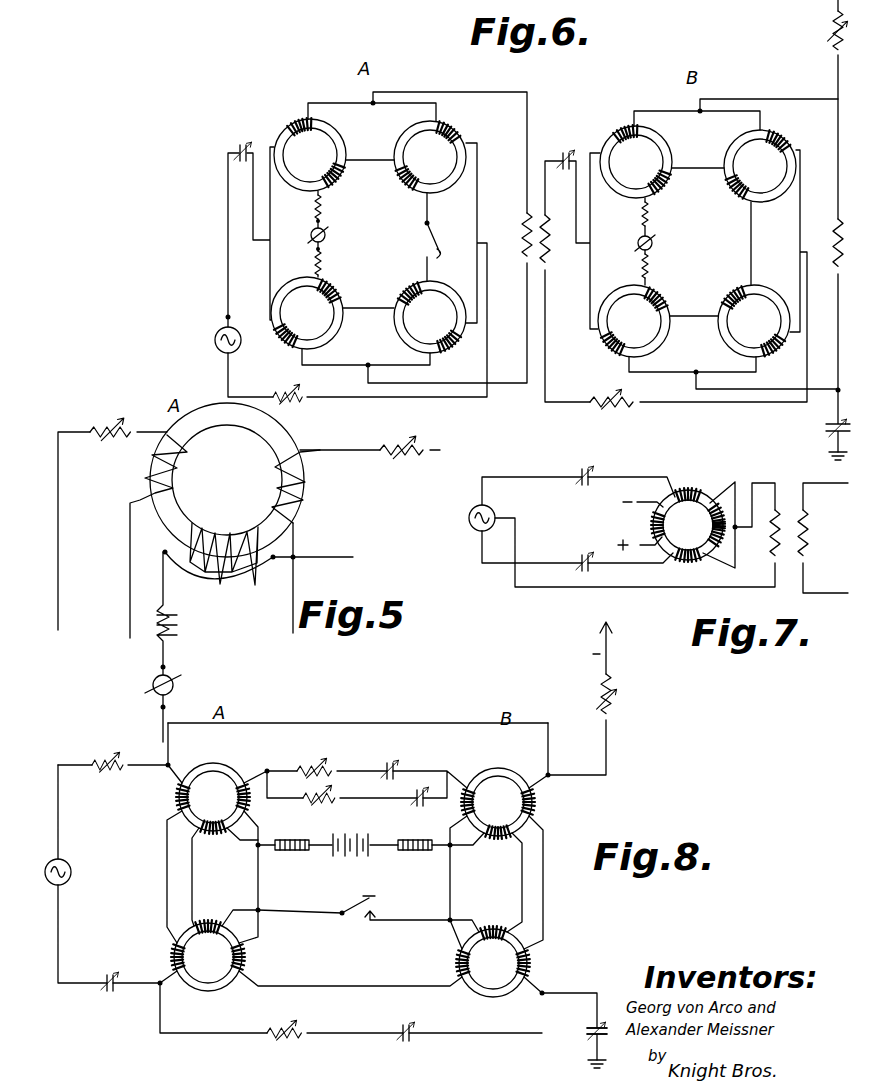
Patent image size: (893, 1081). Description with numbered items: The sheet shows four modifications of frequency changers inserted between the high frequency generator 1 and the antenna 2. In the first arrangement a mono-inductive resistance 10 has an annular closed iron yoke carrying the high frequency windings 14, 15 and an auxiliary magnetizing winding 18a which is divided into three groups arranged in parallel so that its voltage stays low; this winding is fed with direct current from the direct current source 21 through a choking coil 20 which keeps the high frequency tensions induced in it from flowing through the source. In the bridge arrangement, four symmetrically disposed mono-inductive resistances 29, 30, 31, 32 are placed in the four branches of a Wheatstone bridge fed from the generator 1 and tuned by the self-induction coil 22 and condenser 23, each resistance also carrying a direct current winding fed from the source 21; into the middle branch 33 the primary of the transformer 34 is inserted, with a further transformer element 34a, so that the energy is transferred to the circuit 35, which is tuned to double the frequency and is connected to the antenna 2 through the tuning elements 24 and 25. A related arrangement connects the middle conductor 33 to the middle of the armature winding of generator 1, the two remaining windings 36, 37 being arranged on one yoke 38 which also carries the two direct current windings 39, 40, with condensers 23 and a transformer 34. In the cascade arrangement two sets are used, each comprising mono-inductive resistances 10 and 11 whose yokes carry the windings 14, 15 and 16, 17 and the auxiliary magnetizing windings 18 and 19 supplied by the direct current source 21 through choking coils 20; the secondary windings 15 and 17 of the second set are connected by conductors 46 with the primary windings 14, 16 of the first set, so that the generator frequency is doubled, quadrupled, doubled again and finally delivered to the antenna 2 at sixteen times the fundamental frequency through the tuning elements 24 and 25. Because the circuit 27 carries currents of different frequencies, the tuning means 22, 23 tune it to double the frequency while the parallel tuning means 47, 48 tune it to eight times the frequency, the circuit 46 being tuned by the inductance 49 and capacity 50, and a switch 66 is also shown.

In FIG. 6, the high frequency generator 1 is at (232, 331).
In FIG. 7, the high frequency generator 1 is at (494, 512).
In FIG. 8, the high frequency generator 1 is at (68, 869).
In FIG. 8, the antenna 2 is at (596, 648).
In FIG. 5, the mono-inductive resistance 10 is at (227, 480).
In FIG. 8, the mono-inductive resistance 10 is at (355, 799).
In FIG. 8, the mono-inductive resistance 11 is at (350, 960).
In FIG. 5, the winding 14 is at (150, 536).
In FIG. 8, the winding 14 is at (176, 798).
In FIG. 5, the winding 15 is at (304, 486).
In FIG. 8, the winding 15 is at (250, 805).
In FIG. 8, the winding 16 is at (172, 957).
In FIG. 8, the winding 17 is at (244, 958).
In FIG. 8, the auxiliary magnetizing winding 18 is at (221, 834).
In FIG. 5, the auxiliary magnetizing winding 18a is at (219, 567).
In FIG. 8, the auxiliary magnetizing winding 19 is at (209, 922).
In FIG. 5, the choking coil 20 is at (178, 625).
In FIG. 8, the choking coil 20 is at (297, 851).
In FIG. 6, the direct current source 21 is at (310, 240).
In FIG. 5, the direct current source 21 is at (176, 685).
In FIG. 8, the direct current source 21 is at (352, 858).
In FIG. 6, the self-induction coil 22 is at (606, 420).
In FIG. 8, the self-induction coil 22 is at (194, 755).
In FIG. 6, the condenser 23 is at (405, 148).
In FIG. 7, the condenser 23 is at (583, 507).
In FIG. 8, the condenser 23 is at (255, 881).
In FIG. 6, the self-induction coil 24 is at (826, 25).
In FIG. 8, the self-induction coil 24 is at (619, 694).
In FIG. 6, the condenser 25 is at (824, 432).
In FIG. 8, the condenser 25 is at (588, 1033).
In FIG. 8, the oscillation circuit 27 is at (257, 874).
In FIG. 6, the mono-inductive resistance 29 is at (473, 157).
In FIG. 6, the mono-inductive resistance 30 is at (470, 317).
In FIG. 6, the mono-inductive resistance 31 is at (595, 160).
In FIG. 6, the mono-inductive resistance 32 is at (592, 319).
In FIG. 6, the middle branch 33 is at (426, 93).
In FIG. 6, the transformer 34 is at (523, 236).
In FIG. 7, the transformer 34 is at (794, 536).
In FIG. 6, the transformer 34a is at (840, 256).
In FIG. 6, the circuit 35 is at (738, 407).
In FIG. 7, the winding 36 is at (696, 489).
In FIG. 7, the winding 37 is at (697, 561).
In FIG. 7, the yoke 38 is at (712, 501).
In FIG. 7, the direct current winding 39 is at (653, 523).
In FIG. 7, the direct current winding 40 is at (720, 534).
In FIG. 8, the conductor 46 is at (372, 728).
In FIG. 8, the tuning means 47 is at (321, 807).
In FIG. 8, the tuning means 48 is at (416, 811).
In FIG. 8, the inductance 49 is at (284, 1018).
In FIG. 8, the capacity 50 is at (408, 1019).
In FIG. 6, the switch 66 is at (438, 242).
In FIG. 8, the switch 66 is at (357, 925).